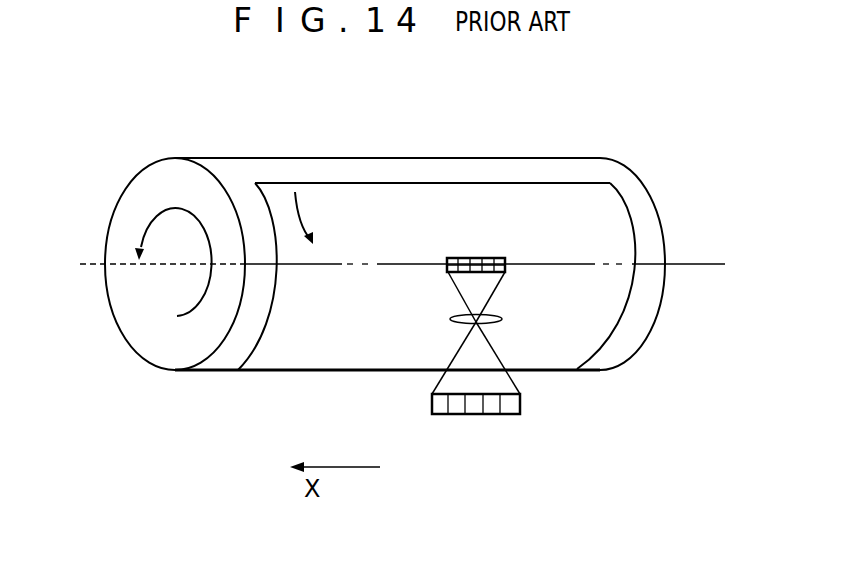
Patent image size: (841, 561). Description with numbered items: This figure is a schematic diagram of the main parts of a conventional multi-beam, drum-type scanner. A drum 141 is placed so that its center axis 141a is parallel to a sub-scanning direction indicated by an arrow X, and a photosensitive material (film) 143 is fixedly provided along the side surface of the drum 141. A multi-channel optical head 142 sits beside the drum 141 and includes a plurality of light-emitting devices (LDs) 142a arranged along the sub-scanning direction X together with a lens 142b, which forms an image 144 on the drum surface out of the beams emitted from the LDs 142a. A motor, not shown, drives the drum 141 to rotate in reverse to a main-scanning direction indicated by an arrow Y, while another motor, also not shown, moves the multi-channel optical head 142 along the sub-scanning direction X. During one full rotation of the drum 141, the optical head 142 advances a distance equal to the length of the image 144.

The drum 141 is at (125, 342).
The center axis 141a is at (695, 264).
The multi-channel optical head 142 is at (539, 414).
The light-emitting devices (LDs) 142a is at (477, 416).
The lens 142b is at (451, 320).
The photosensitive material (film) 143 is at (285, 348).
The image 144 is at (475, 257).